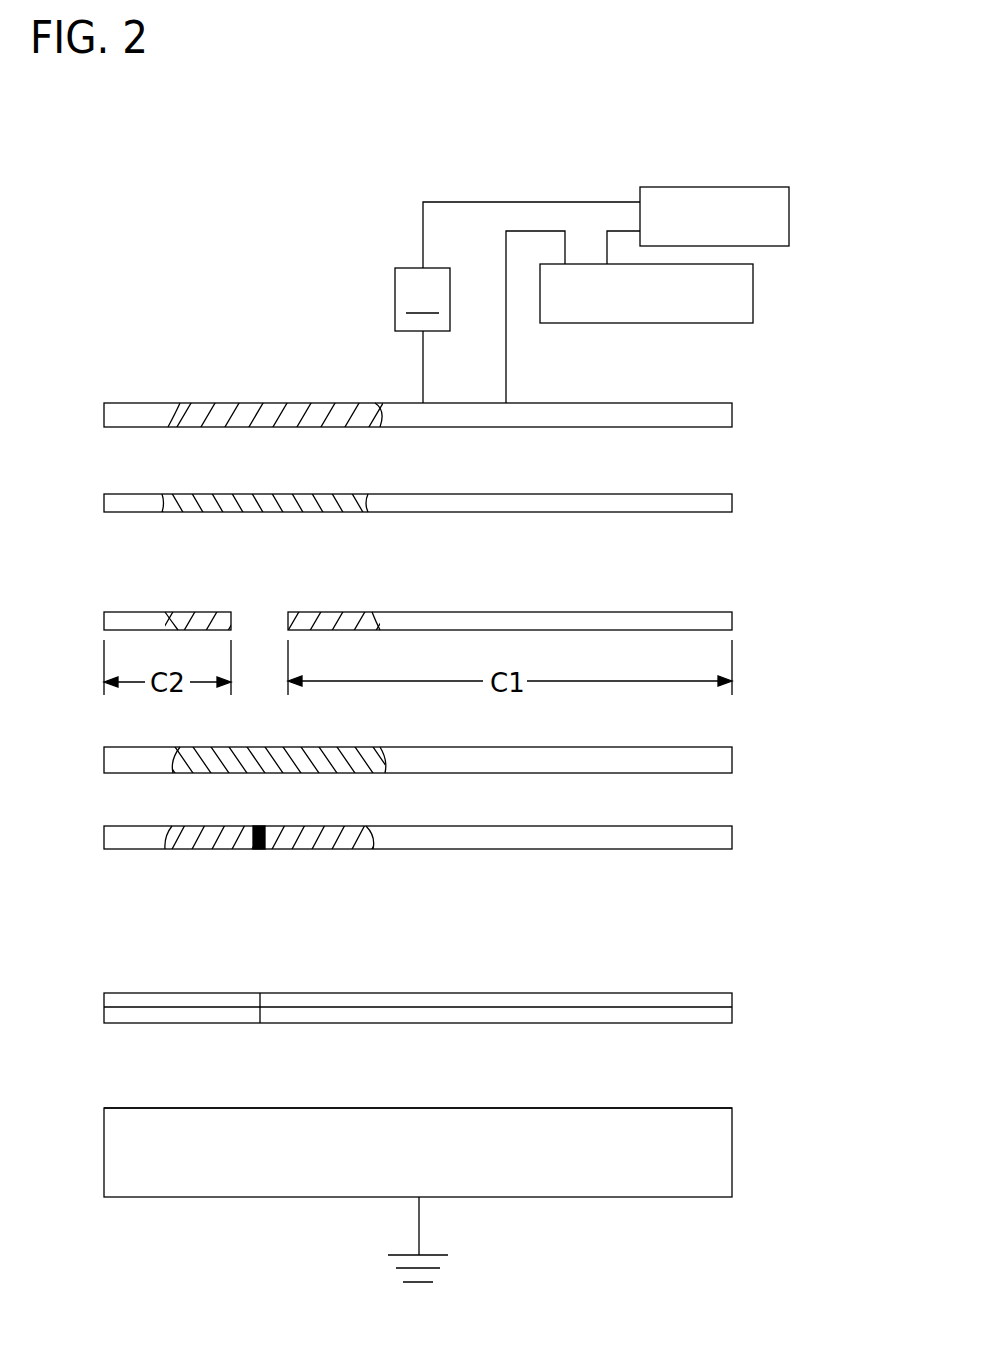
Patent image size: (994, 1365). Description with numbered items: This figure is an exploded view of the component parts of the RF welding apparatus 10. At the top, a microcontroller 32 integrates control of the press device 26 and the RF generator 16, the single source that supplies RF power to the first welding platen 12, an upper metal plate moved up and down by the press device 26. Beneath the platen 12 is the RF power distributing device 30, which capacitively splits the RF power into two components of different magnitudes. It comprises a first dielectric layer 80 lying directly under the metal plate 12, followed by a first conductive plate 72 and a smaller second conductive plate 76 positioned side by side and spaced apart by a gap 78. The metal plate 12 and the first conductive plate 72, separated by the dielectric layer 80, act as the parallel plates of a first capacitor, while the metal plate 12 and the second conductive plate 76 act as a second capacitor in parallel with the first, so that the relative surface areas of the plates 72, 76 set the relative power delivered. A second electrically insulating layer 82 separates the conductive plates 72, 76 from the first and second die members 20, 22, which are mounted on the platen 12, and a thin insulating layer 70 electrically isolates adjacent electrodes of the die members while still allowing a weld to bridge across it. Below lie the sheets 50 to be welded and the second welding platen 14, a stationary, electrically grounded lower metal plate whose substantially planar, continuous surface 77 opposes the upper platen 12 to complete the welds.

The RF welding apparatus 10 is at (718, 147).
The microcontroller 32 is at (795, 220).
The RF generator 16 is at (755, 298).
The press device 26 is at (392, 293).
The first welding platen 12 is at (737, 398).
The first dielectric layer 80 is at (104, 503).
The second conductive plate 76 is at (143, 612).
The gap 78 is at (288, 600).
The first conductive plate 72 is at (670, 612).
The RF power distributing device 30 is at (757, 494).
The second electrically insulating layer 82 is at (104, 763).
The first die member 20 is at (600, 850).
The second die member 22 is at (128, 849).
The insulating layer 70 is at (258, 849).
The sheets 50 is at (677, 993).
The continuous surface 77 is at (353, 1108).
The second welding platen 14 is at (733, 1155).